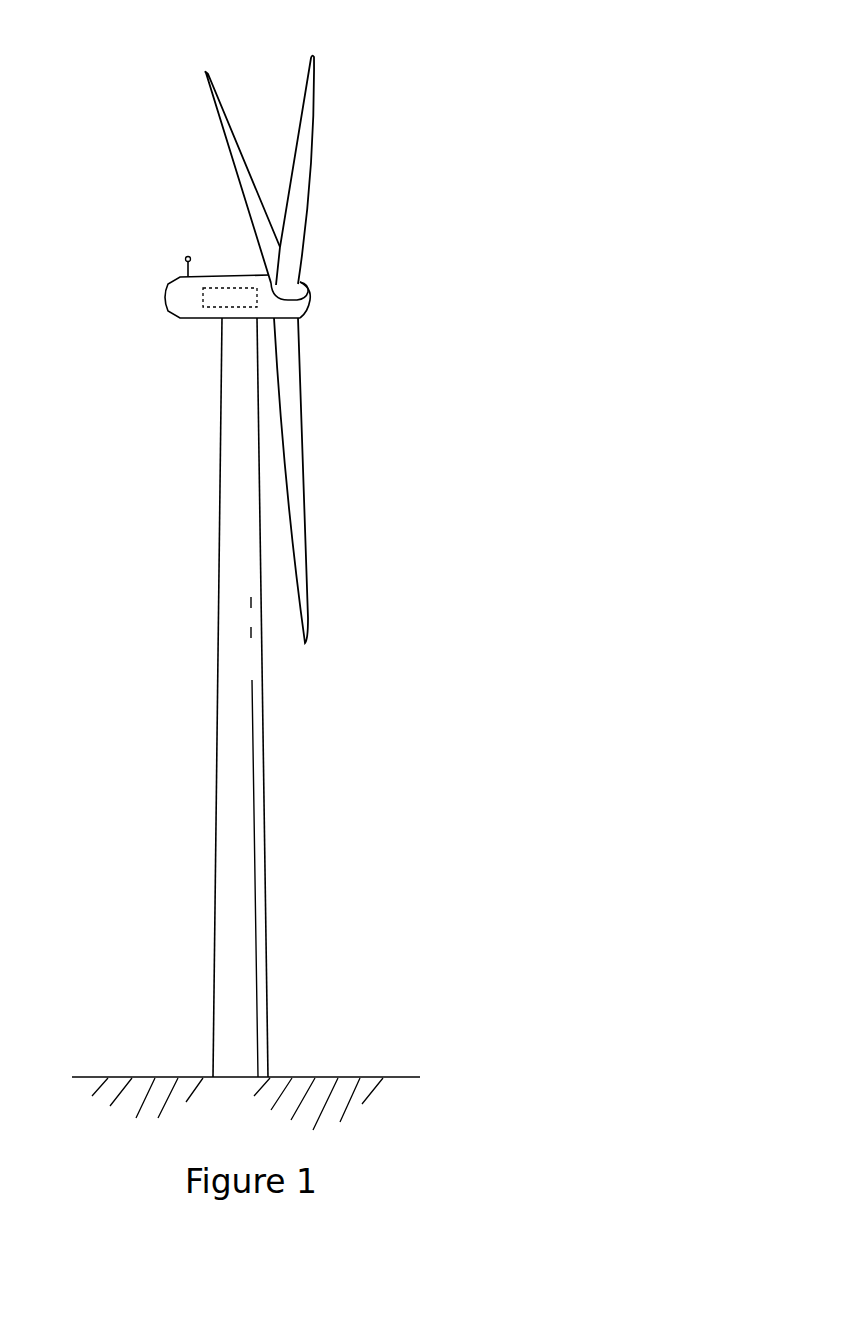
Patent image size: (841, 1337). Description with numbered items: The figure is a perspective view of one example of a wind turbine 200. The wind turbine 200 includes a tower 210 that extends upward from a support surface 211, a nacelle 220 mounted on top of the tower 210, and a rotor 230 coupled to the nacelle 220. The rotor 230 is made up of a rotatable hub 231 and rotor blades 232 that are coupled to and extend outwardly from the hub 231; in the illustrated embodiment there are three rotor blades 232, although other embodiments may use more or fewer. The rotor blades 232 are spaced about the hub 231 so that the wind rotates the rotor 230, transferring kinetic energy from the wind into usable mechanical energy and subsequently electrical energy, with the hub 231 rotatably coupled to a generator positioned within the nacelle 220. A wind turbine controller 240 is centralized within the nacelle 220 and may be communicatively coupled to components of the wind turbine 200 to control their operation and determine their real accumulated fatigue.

The wind turbine 200 is at (418, 132).
The tower 210 is at (228, 802).
The support surface 211 is at (147, 1075).
The nacelle 220 is at (203, 323).
The rotor 230 is at (313, 272).
The rotatable hub 231 is at (309, 302).
The rotor blade 232 is at (302, 97).
The wind turbine controller 240 is at (227, 295).